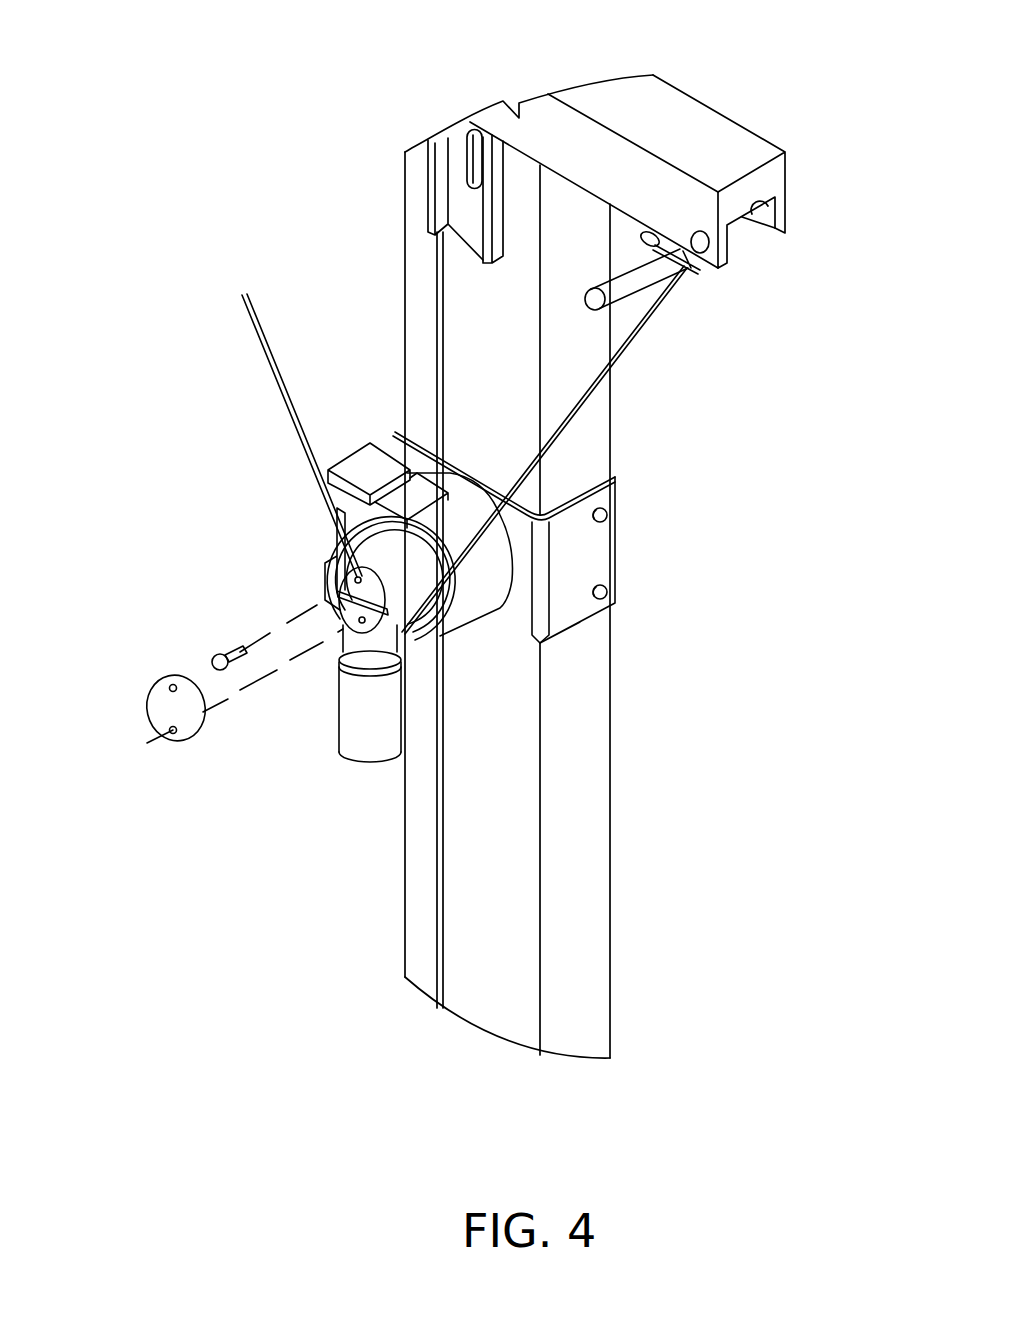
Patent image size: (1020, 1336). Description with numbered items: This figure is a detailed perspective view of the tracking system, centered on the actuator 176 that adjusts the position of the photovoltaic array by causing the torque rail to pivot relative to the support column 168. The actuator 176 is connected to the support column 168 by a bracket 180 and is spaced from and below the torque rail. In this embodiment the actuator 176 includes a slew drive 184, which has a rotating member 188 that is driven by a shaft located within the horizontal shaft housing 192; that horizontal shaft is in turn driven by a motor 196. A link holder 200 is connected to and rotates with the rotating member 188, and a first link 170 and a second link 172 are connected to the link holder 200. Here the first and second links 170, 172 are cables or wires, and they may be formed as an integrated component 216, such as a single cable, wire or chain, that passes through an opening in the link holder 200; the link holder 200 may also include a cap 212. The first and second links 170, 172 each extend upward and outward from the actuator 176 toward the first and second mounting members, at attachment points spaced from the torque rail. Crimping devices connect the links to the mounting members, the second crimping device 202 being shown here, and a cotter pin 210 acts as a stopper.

The support column 168 is at (568, 965).
The first link 170 is at (275, 377).
The second link 172 is at (633, 343).
The actuator 176 is at (335, 543).
The bracket 180 is at (590, 555).
The slew drive 184 is at (483, 584).
The rotating member 188 is at (427, 620).
The horizontal shaft housing 192 is at (358, 657).
The motor 196 is at (358, 743).
The link holder 200 is at (322, 606).
The second crimping device 202 is at (700, 273).
The cotter pin 210 is at (592, 294).
The cap 212 is at (165, 707).
The integrated component 216 is at (600, 443).